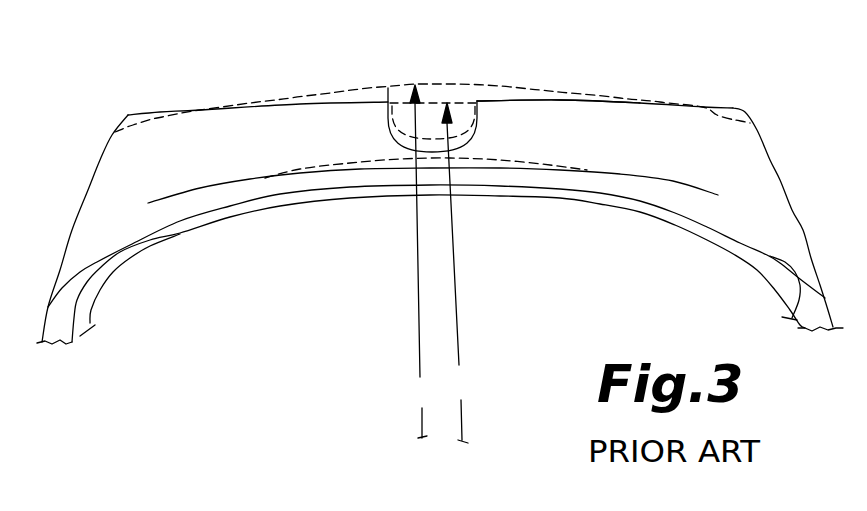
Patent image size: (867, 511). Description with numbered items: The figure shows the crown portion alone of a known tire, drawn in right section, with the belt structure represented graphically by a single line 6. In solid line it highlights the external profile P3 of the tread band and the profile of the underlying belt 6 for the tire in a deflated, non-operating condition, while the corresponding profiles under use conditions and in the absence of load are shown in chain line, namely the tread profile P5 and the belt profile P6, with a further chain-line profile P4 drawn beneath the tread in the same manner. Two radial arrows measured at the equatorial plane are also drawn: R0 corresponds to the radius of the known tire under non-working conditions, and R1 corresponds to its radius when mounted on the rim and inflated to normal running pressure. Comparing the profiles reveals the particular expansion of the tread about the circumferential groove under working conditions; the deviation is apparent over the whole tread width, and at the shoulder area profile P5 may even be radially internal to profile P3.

The belt structure 6 is at (677, 182).
The external profile of the tread band under use conditions P5 is at (325, 93).
The external profile of the tread band P3 is at (528, 100).
The intermediate profile line P4 is at (345, 173).
The profile of the belt under use conditions P6 is at (372, 160).
The radius of the known tire at the equatorial plane under normal running pressure R1 is at (419, 261).
The radius of the known tire under non-working conditions R0 is at (463, 273).